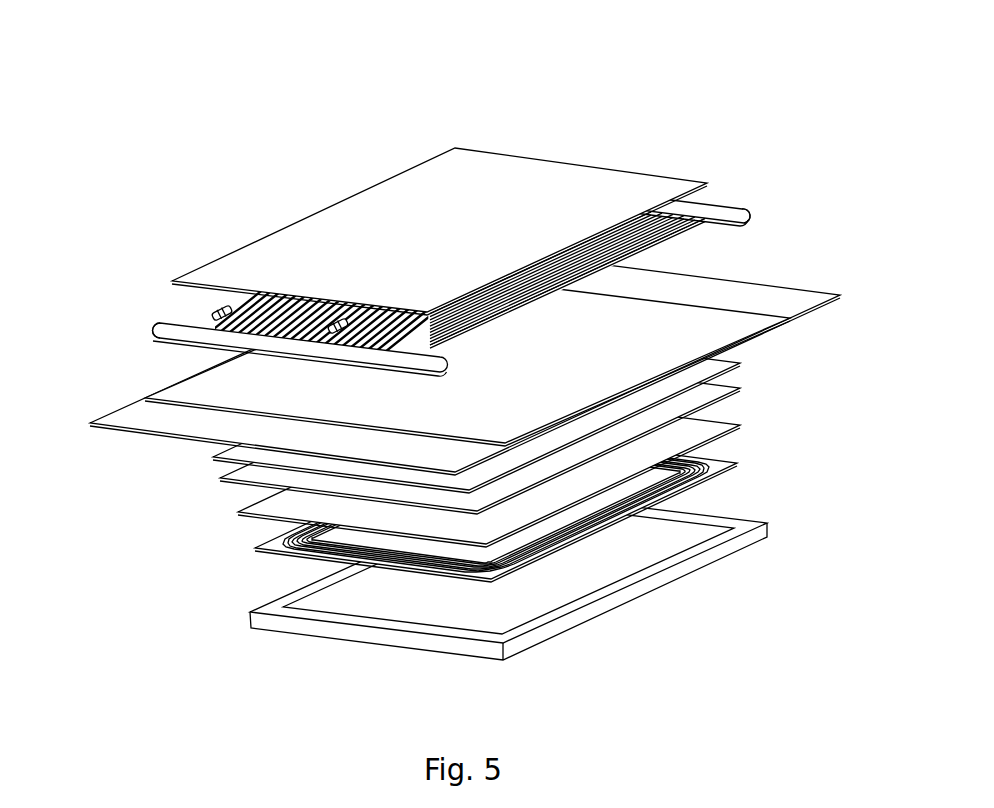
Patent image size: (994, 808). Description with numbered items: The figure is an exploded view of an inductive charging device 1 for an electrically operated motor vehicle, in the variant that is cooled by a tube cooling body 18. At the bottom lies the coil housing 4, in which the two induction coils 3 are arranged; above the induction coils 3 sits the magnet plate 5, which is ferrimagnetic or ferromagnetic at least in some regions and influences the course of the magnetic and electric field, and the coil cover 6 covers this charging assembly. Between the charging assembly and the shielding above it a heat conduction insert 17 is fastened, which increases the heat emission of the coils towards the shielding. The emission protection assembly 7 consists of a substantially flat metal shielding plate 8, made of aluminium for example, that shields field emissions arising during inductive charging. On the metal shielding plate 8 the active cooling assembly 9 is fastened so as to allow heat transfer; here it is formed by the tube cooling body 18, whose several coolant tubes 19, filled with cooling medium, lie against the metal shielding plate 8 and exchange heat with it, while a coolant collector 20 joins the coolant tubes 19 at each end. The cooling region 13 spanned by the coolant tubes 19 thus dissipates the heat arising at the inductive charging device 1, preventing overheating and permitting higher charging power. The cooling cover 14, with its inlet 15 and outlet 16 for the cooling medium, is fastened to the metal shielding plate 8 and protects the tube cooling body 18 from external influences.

The inductive charging device 1 is at (255, 124).
The induction coil 3 is at (717, 463).
The coil housing 4 is at (760, 530).
The magnet plate 5 is at (718, 427).
The coil cover 6 is at (717, 393).
The emission protection assembly 7 is at (124, 332).
The metal shielding plate 8 is at (800, 304).
The active cooling assembly 9 is at (441, 271).
The cooling region 13 is at (503, 342).
The cooling cover 14 is at (277, 255).
The inlet 15 is at (213, 310).
The outlet 16 is at (335, 338).
The heat conduction insert 17 is at (725, 362).
The tube cooling body 18 is at (777, 206).
The coolant tube 19 is at (690, 233).
The coolant collector 20 is at (160, 340).